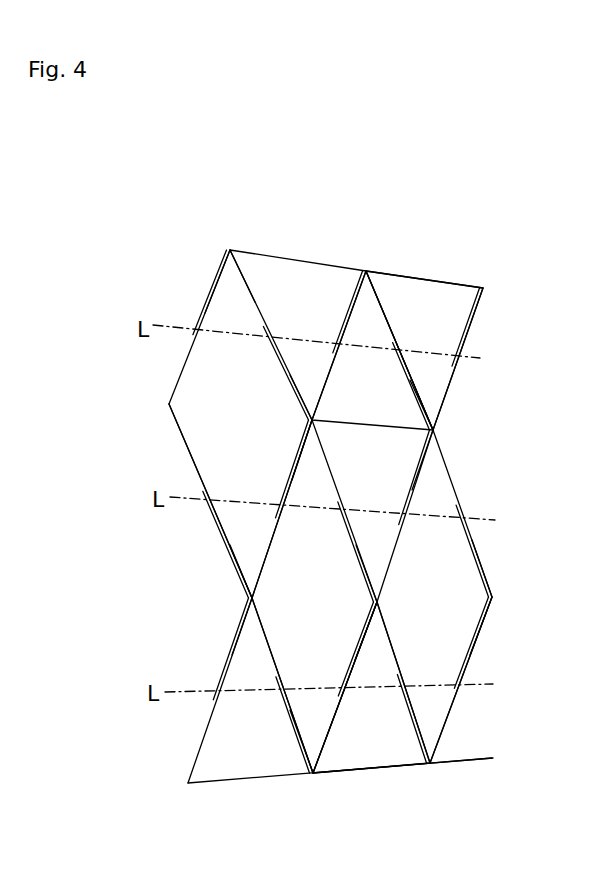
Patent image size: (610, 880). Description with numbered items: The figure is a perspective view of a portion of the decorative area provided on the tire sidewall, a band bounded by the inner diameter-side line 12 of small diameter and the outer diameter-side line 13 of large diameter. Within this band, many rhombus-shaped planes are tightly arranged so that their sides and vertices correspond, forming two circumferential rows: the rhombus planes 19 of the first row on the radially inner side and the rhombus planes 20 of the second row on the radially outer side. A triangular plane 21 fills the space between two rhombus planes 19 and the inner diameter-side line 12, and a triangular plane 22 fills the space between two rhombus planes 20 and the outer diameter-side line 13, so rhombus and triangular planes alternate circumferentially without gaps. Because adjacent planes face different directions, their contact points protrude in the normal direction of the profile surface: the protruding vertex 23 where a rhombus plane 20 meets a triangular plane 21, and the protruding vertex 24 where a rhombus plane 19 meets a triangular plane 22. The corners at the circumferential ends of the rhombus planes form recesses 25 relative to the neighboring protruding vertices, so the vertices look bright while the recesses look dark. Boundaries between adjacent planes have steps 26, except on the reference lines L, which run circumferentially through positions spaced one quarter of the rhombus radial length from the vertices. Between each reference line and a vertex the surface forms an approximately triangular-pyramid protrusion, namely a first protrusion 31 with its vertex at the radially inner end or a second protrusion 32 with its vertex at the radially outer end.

The inner diameter-side line 12 is at (477, 763).
The outer diameter-side line 13 is at (462, 283).
The rhombus plane 19 is at (447, 657).
The rhombus plane 20 is at (387, 395).
The triangular plane 21 is at (385, 718).
The triangular plane 22 is at (412, 320).
The protruding vertex 23 is at (380, 602).
The protruding vertex 24 is at (316, 416).
The recess 25 is at (180, 405).
The step 26 is at (228, 252).
The first protrusion 31 is at (310, 398).
The second protrusion 32 is at (362, 297).